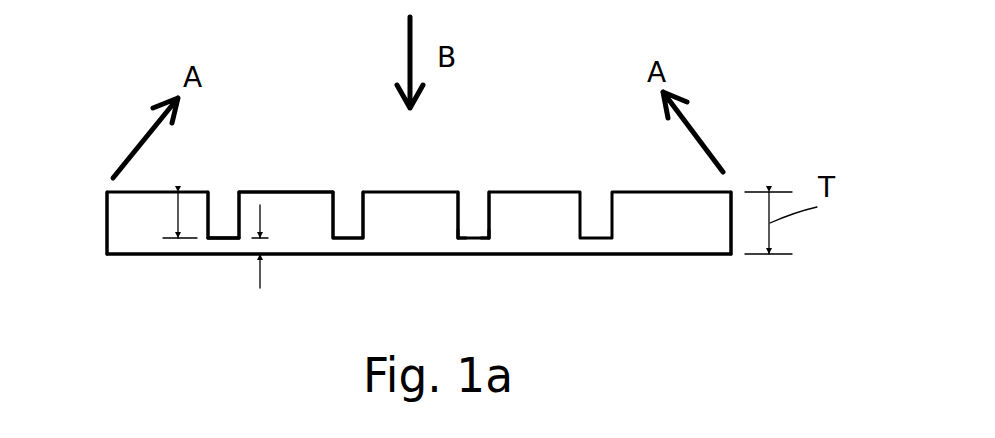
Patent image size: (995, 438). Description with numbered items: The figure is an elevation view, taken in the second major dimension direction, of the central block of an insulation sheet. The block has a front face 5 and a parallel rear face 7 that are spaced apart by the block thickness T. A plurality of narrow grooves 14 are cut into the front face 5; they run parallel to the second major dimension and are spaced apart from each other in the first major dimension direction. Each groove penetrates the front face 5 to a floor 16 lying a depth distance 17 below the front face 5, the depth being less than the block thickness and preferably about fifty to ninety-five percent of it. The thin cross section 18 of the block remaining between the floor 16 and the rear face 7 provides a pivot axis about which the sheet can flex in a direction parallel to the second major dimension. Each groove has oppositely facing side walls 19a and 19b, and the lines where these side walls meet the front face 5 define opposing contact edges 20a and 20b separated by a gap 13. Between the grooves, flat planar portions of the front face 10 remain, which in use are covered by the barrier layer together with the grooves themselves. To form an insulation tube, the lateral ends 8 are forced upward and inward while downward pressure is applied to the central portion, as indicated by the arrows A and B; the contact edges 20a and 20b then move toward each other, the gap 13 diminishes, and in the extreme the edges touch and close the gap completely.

The front face 5 is at (573, 192).
The rear face 7 is at (419, 281).
The lateral ends 8 is at (127, 245).
The flat planar portions of the front face 10 is at (283, 190).
The gap 13 is at (345, 192).
The narrow grooves 14 is at (217, 205).
The floor 16 is at (222, 238).
The depth distance 17 is at (170, 217).
The thin cross section 18 is at (260, 288).
The side wall 19a is at (460, 240).
The side wall 19b is at (487, 208).
The contact edge 20a is at (458, 192).
The contact edge 20b is at (489, 192).